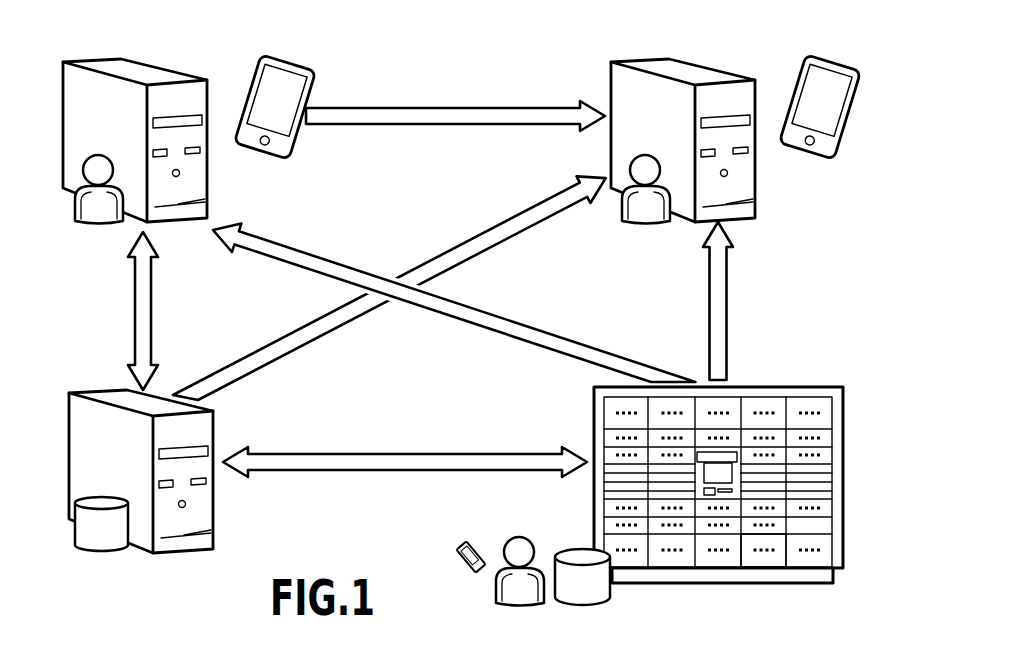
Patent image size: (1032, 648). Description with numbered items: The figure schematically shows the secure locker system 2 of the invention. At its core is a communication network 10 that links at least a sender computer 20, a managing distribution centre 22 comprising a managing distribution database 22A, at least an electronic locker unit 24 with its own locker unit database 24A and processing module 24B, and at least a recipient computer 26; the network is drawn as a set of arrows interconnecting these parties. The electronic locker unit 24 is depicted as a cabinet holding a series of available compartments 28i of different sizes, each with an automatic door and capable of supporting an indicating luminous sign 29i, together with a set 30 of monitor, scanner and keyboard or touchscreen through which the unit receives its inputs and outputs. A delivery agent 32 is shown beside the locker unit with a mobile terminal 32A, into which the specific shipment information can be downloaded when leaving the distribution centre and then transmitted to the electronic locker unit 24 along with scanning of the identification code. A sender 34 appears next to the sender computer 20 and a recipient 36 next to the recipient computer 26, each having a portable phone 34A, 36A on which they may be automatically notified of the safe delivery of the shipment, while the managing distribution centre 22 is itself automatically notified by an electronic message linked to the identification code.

The secure locker system 2 is at (413, 90).
The communication network 10 is at (410, 367).
The sender computer 20 is at (147, 67).
The managing distribution centre 22 is at (107, 395).
The managing distribution database 22A is at (112, 522).
The electronic locker unit 24 is at (800, 385).
The locker unit database 24A is at (580, 591).
The processing module 24B is at (722, 457).
The recipient computer 26 is at (776, 75).
The compartment 28i is at (760, 562).
The indicating luminous sign 29i is at (810, 552).
The set of monitor, scanner and keyboard or touchscreen 30 is at (712, 475).
The delivery agent 32 is at (520, 548).
The mobile terminal 32A is at (478, 547).
The sender 34 is at (100, 170).
The portable phone 34A is at (281, 70).
The recipient 36 is at (648, 168).
The portable phone 36A is at (848, 72).